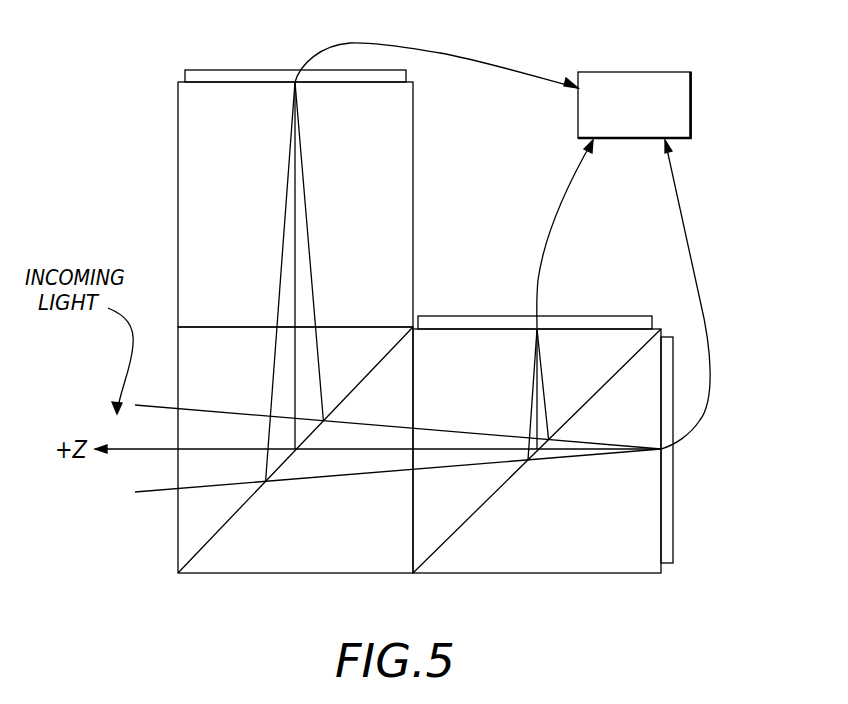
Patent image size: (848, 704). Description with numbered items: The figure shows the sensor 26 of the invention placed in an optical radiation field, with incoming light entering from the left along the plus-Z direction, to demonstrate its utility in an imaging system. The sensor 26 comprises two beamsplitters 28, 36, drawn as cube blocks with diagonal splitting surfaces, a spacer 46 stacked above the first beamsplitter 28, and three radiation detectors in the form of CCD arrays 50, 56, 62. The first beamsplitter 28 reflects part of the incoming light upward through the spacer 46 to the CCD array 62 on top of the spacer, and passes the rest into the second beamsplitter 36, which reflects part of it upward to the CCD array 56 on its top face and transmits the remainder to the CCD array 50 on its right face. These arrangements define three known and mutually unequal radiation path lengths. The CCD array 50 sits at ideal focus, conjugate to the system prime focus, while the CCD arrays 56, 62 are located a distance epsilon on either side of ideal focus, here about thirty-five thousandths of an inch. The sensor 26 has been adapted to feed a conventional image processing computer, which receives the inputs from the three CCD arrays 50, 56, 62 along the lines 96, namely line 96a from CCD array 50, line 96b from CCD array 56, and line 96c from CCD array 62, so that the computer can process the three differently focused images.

The sensor 26 is at (735, 130).
The beamsplitter 28 is at (237, 372).
The beamsplitter 36 is at (589, 540).
The spacer 46 is at (237, 222).
The CCD array 50 is at (661, 449).
The CCD array 56 is at (537, 317).
The CCD array 62 is at (295, 82).
The lines 96 is at (638, 140).
The line 96a is at (698, 278).
The line 96b is at (545, 233).
The line 96c is at (510, 71).